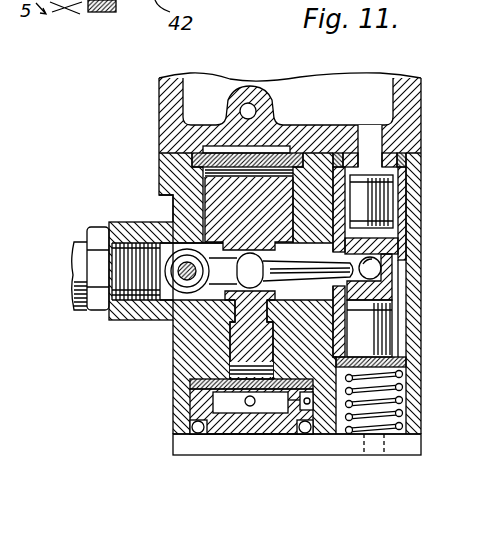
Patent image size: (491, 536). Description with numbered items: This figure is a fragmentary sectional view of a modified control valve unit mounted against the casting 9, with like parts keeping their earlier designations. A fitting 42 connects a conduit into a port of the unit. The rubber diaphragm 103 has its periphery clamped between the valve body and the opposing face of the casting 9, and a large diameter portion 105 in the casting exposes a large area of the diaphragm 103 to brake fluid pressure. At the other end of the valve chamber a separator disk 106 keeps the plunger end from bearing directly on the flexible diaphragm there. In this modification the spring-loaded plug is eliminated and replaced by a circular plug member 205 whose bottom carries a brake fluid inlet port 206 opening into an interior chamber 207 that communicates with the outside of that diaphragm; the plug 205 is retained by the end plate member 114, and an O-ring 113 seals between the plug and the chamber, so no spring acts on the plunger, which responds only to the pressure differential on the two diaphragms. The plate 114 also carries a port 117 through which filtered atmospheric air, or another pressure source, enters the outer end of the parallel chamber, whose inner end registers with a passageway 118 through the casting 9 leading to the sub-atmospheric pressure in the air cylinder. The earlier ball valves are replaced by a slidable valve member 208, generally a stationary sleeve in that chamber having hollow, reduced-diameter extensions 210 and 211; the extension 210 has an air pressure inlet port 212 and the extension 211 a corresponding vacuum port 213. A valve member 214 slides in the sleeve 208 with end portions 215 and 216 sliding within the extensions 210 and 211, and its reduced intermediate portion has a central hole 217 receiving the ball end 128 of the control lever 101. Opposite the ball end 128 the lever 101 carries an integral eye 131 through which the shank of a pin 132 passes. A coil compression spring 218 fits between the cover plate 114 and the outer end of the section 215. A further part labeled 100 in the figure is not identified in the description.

The casting 9 is at (429, 81).
The fitting 42 is at (101, 308).
The housing boss 100 is at (174, 218).
The control lever 101 is at (285, 278).
The rubber diaphragm 103 is at (195, 160).
The large diameter portion 105 is at (288, 101).
The separator disk 106 is at (190, 383).
The O-ring seal 113 is at (303, 437).
The retainer plate 114 is at (327, 450).
The port 117 is at (379, 456).
The passageway 118 is at (379, 135).
The ball member 128 is at (388, 278).
The eye 131 is at (178, 290).
The pin 132 is at (177, 272).
The plug member 205 is at (237, 428).
The brake fluid inlet port 206 is at (250, 407).
The interior chamber 207 is at (218, 400).
The slidable valve member 208 is at (392, 298).
The extension 210 is at (404, 367).
The extension 211 is at (364, 194).
The air pressure inlet port 212 is at (340, 320).
The vacuum port 213 is at (343, 227).
The valve member 214 is at (372, 242).
The end portion 215 is at (394, 355).
The end portion 216 is at (358, 170).
The hole 217 is at (382, 266).
The coil compression spring 218 is at (397, 400).